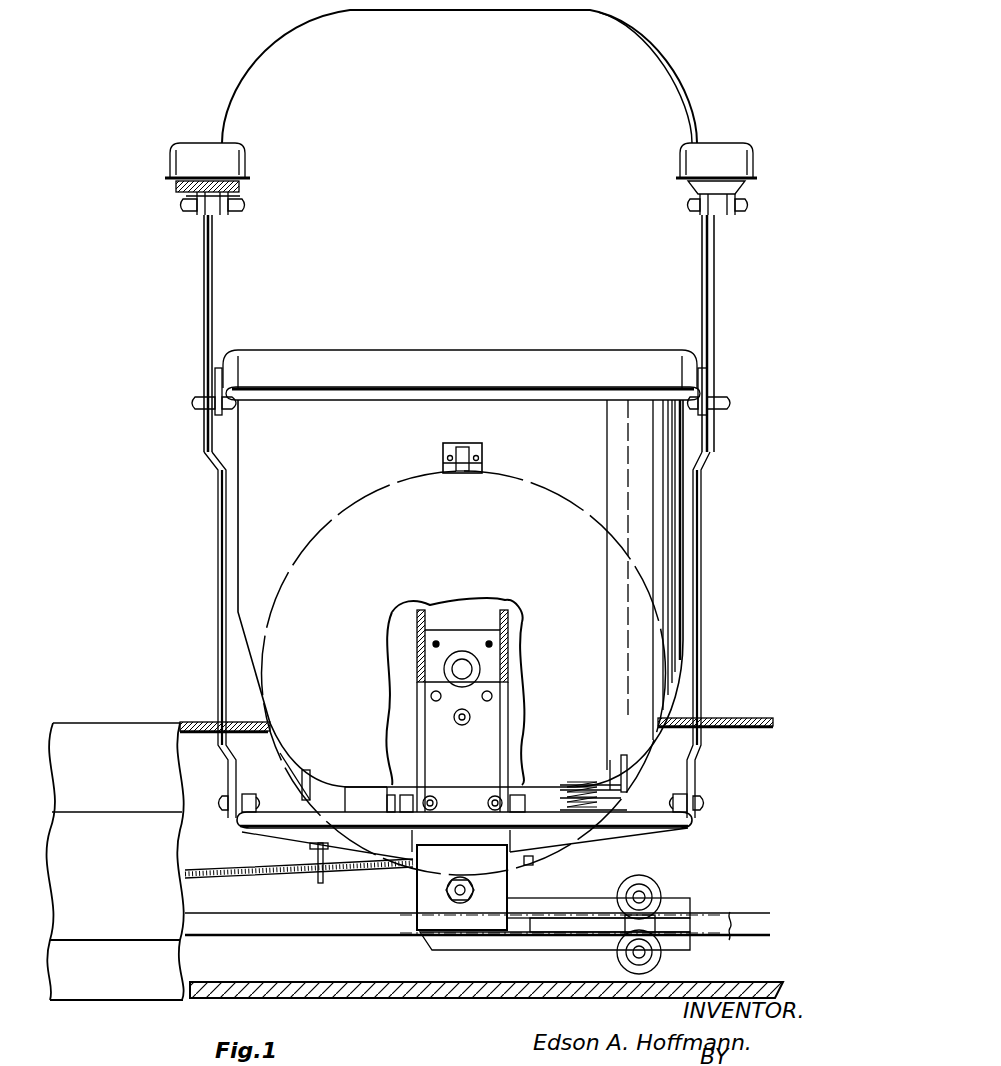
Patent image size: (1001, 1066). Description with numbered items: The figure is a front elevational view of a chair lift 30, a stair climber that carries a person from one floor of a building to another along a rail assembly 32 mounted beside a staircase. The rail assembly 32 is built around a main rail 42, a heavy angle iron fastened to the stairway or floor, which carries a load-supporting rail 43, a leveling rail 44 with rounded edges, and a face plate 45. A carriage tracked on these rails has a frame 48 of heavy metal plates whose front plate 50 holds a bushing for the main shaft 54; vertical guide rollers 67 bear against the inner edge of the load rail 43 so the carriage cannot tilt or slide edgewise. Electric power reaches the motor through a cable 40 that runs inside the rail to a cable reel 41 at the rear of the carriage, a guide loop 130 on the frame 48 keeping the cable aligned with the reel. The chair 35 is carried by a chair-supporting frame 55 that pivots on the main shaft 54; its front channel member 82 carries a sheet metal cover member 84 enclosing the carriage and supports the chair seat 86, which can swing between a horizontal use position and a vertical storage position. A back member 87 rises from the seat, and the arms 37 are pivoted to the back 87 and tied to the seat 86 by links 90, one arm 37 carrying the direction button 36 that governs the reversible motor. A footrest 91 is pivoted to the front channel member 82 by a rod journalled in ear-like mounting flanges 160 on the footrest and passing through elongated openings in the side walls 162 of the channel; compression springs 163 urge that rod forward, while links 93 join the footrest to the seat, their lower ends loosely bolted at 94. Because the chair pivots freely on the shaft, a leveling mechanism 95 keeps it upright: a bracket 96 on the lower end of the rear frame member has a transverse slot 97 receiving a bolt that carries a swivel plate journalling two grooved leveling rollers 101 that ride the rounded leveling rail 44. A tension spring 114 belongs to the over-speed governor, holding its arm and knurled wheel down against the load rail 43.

The chair lift 30 is at (236, 76).
The back member 87 is at (660, 60).
The arm 37 is at (205, 155).
The direction button 36 is at (236, 196).
The link 90 is at (204, 296).
The chair seat 86 is at (356, 358).
The chair 35 is at (522, 348).
The sheet metal cover member 84 is at (656, 520).
The link 93 is at (219, 625).
The frame 48 is at (405, 626).
The side wall 162 is at (515, 625).
The front plate 50 is at (408, 656).
The main shaft 54 is at (462, 669).
The chair-supporting frame 55 is at (488, 746).
The front channel member 82 is at (490, 766).
The compression spring 163 is at (430, 797).
The vertical guide roller 67 is at (624, 778).
The tension spring 114 is at (600, 803).
The rail assembly 32 is at (100, 746).
The load-supporting rail 43 is at (172, 718).
The cable reel 41 is at (290, 762).
The bolt 94 is at (222, 802).
The mounting flange 160 is at (250, 797).
The face plate 45 is at (73, 884).
The cable 40 is at (204, 880).
The guide loop 130 is at (323, 880).
The footrest 91 is at (668, 832).
The leveling rail 44 is at (252, 930).
The main rail 42 is at (178, 974).
The leveling mechanism 95 is at (564, 907).
The bracket 96 is at (658, 890).
The transverse slot 97 is at (685, 926).
The leveling roller 101 is at (660, 960).